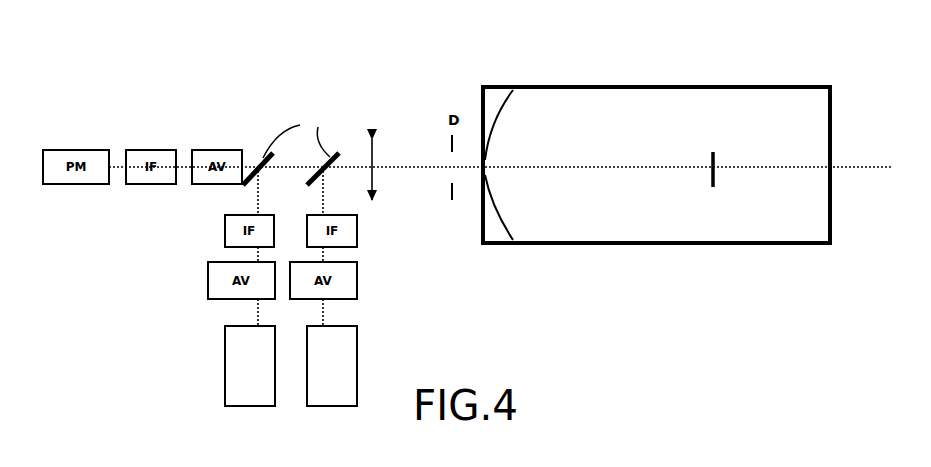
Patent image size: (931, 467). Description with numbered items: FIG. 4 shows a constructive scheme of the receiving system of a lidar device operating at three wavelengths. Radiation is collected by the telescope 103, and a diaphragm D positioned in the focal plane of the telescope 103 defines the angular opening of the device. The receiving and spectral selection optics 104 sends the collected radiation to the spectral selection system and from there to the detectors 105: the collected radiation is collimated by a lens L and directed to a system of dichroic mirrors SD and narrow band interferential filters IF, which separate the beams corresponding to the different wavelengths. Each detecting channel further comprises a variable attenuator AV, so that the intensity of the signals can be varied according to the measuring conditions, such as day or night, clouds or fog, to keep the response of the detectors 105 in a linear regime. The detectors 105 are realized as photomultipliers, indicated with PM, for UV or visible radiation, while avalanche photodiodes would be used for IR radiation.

The telescope 103 is at (640, 82).
The receiving and spectral selection optics 104 is at (350, 100).
The detectors 105 is at (87, 190).